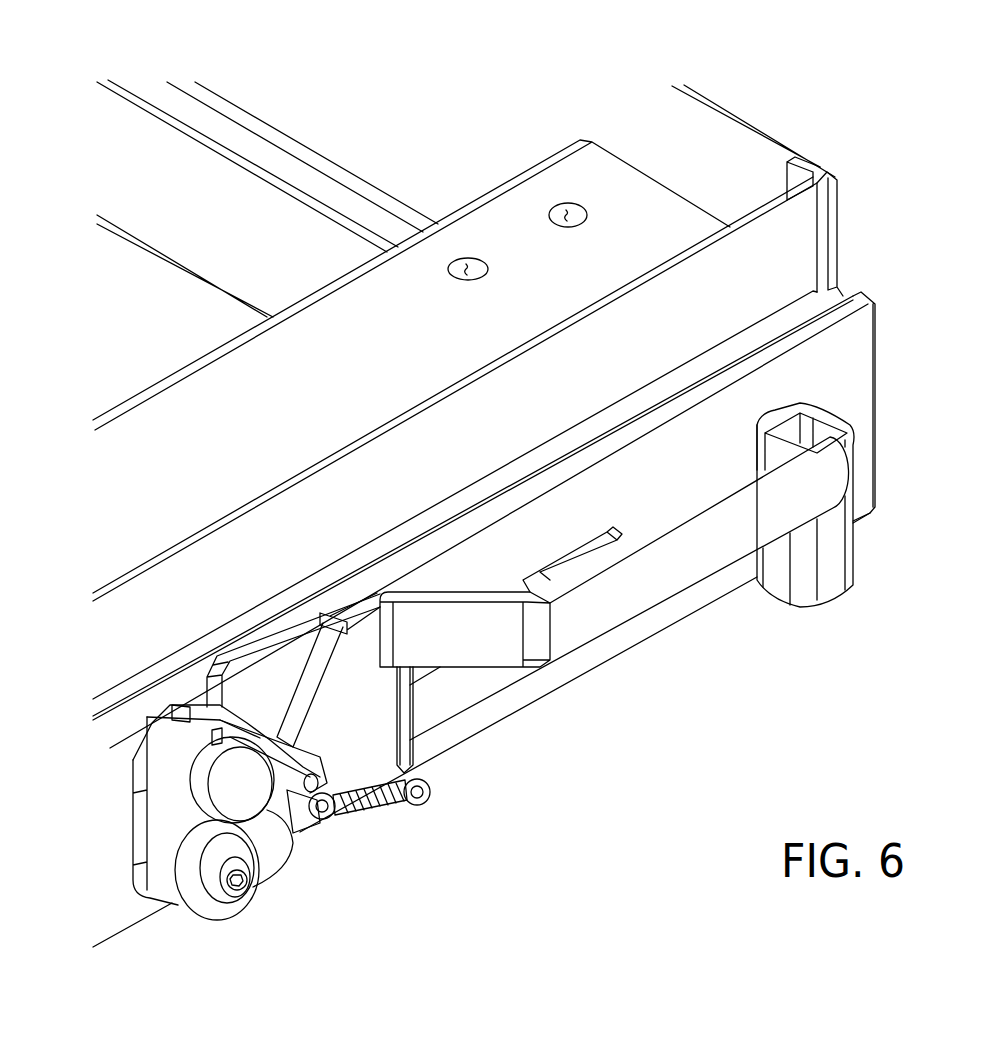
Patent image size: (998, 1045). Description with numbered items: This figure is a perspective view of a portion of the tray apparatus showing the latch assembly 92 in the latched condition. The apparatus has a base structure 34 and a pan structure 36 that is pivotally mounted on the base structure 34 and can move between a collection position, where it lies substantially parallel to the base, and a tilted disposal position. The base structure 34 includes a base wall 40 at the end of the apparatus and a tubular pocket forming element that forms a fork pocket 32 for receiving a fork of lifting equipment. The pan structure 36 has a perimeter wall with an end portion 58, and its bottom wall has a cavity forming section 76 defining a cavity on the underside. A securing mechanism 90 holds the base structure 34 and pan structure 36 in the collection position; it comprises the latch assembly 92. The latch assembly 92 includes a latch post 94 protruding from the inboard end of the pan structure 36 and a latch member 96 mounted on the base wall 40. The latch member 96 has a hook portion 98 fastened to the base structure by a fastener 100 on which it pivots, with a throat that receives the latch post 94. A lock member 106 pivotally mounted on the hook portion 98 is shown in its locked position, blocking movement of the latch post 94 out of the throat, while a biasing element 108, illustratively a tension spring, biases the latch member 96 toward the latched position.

The fork pocket 32 is at (459, 705).
The base structure 34 is at (876, 563).
The pan structure 36 is at (810, 133).
The base wall 40 is at (850, 366).
The end portion 58 is at (787, 255).
The cavity forming section 76 is at (813, 178).
The securing mechanism 90 is at (564, 948).
The latch assembly 92 is at (294, 912).
The latch post 94 is at (227, 785).
The latch member 96 is at (677, 596).
The hook portion 98 is at (153, 850).
The fastener 100 is at (233, 903).
The lock member 106 is at (282, 812).
The biasing element 108 is at (368, 806).